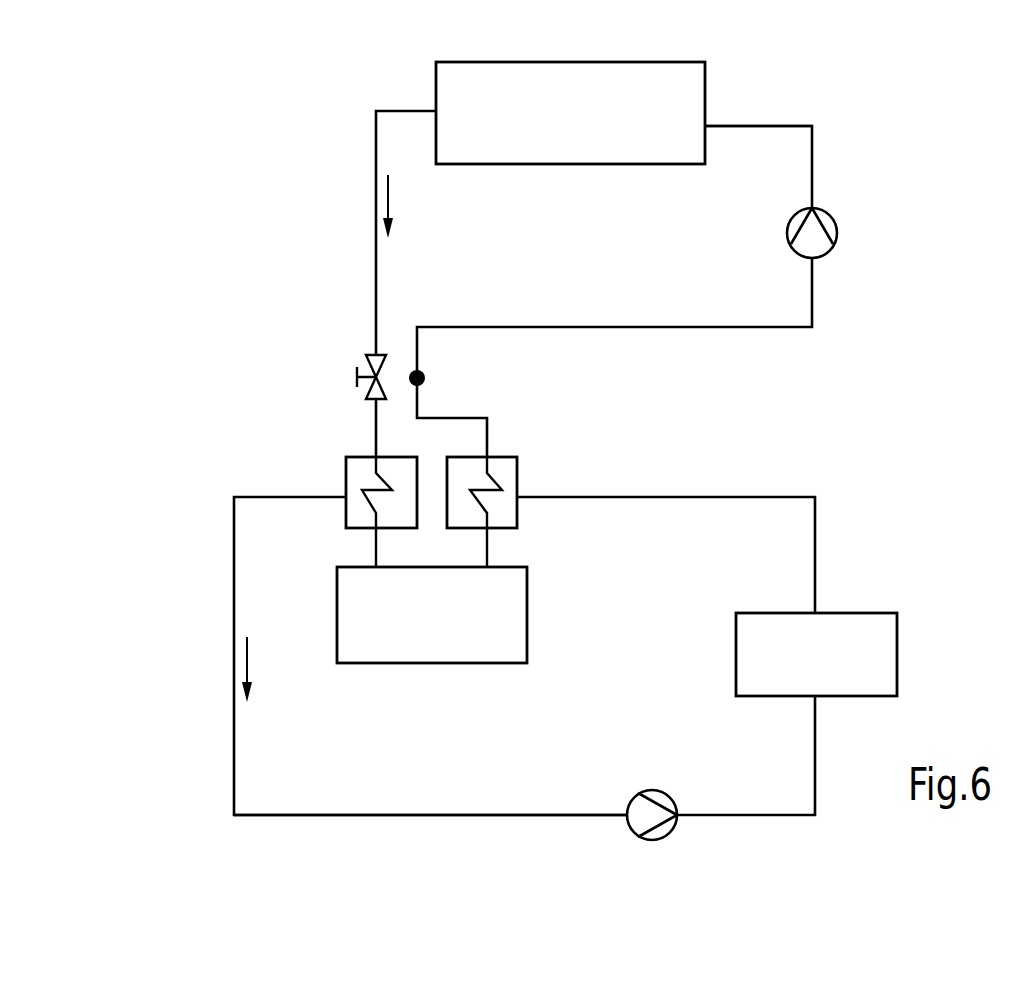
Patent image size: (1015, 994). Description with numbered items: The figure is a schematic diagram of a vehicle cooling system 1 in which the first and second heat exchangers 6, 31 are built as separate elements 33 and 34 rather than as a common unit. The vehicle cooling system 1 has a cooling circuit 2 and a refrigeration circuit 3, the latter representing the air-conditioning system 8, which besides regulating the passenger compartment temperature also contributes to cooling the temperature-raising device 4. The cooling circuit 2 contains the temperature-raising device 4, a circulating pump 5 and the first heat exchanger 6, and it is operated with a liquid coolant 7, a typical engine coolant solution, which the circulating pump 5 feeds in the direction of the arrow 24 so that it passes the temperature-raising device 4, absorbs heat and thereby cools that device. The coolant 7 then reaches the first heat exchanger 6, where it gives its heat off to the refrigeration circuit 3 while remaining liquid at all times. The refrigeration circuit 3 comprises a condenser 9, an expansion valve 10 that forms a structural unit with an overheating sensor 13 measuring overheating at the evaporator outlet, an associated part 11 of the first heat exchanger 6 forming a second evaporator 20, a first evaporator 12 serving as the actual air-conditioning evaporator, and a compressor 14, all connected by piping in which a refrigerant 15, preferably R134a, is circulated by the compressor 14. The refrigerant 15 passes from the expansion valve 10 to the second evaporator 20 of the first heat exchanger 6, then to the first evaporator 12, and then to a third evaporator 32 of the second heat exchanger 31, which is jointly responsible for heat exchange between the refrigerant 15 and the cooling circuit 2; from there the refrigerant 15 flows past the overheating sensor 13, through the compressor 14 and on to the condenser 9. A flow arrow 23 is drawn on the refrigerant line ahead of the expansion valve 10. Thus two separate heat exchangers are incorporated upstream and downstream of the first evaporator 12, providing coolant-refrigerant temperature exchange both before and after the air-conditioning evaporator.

The vehicle cooling system 1 is at (218, 245).
The cooling circuit 2 is at (865, 555).
The refrigeration circuit 3 is at (872, 150).
The temperature-raising device 4 is at (880, 657).
The circulating pump 5 is at (645, 820).
The first heat exchanger 6 is at (350, 483).
The coolant 7 is at (392, 816).
The air-conditioning system 8 is at (922, 200).
The condenser 9 is at (612, 78).
The expansion valve 10 is at (379, 356).
The associated part of the first heat exchanger 11 is at (437, 462).
The first evaporator 12 is at (427, 640).
The overheating sensor 13 is at (425, 377).
The compressor 14 is at (816, 238).
The refrigerant 15 is at (763, 122).
The second evaporator 20 is at (365, 512).
The refrigerant flow direction 23 is at (388, 197).
The arrow 24 is at (247, 655).
The second heat exchanger 31 is at (508, 478).
The third evaporator 32 is at (495, 500).
The separate element 33 is at (340, 458).
The separate element 34 is at (512, 457).